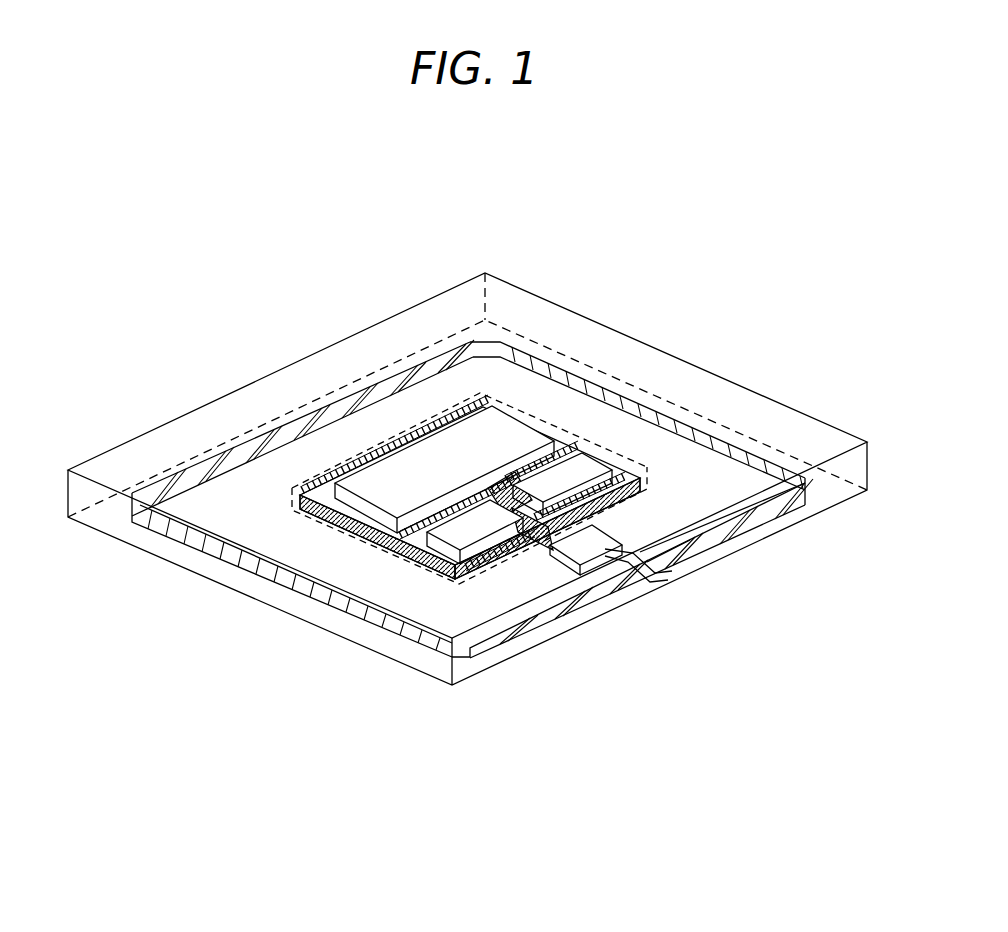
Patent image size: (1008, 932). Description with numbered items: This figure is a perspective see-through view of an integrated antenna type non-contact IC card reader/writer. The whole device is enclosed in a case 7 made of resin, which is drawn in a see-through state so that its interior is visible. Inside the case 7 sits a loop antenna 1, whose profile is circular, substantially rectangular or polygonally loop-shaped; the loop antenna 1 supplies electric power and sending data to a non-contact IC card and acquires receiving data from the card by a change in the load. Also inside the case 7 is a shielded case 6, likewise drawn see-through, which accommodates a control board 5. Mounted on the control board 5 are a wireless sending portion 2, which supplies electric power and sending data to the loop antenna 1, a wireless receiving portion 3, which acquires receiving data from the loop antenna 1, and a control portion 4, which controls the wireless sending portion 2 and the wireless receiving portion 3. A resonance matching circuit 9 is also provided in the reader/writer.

The loop antenna 1 is at (415, 368).
The wireless sending portion 2 is at (458, 528).
The wireless receiving portion 3 is at (585, 458).
The control portion 4 is at (483, 427).
The control board 5 is at (535, 548).
The shielded case 6 is at (548, 412).
The case 7 is at (138, 433).
The resonance matching circuit 9 is at (643, 473).